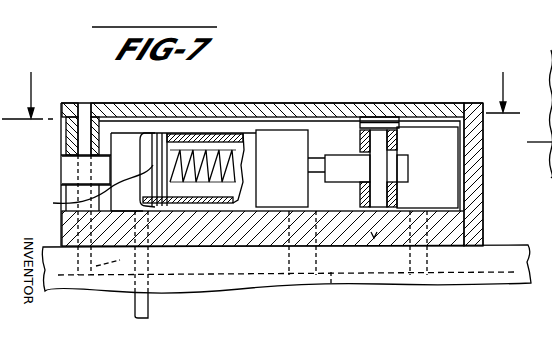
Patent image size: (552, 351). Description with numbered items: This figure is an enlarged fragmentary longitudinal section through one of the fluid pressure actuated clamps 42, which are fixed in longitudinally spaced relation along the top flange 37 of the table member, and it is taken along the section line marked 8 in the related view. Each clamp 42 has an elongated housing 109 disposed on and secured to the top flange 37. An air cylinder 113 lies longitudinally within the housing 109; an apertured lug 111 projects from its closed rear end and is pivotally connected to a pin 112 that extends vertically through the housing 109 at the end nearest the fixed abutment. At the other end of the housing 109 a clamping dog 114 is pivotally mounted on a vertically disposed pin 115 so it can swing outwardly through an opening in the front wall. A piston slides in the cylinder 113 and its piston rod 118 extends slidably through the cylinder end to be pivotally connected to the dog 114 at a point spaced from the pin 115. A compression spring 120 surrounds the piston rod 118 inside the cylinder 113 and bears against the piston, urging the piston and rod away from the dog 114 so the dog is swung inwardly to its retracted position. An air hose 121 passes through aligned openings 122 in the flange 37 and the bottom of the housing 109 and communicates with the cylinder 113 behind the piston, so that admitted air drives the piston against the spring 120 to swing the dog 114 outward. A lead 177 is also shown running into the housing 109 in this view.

The section line 8- 8 is at (277, 112).
The fluid pressure actuated clamp 42 is at (381, 86).
The elongated housing 109 is at (487, 177).
The pin 112 is at (85, 110).
The apertured lug 111 is at (67, 175).
The conductor wire 177 is at (84, 189).
The air cylinder 113 is at (230, 133).
The piston rod 118 is at (188, 158).
The compression spring 120 is at (238, 189).
The vertically disposed pin 115 is at (384, 163).
The clamping dog 114 is at (445, 196).
The top flange 37 is at (551, 257).
The aligned openings 122 is at (89, 266).
The air hose 121 is at (148, 302).